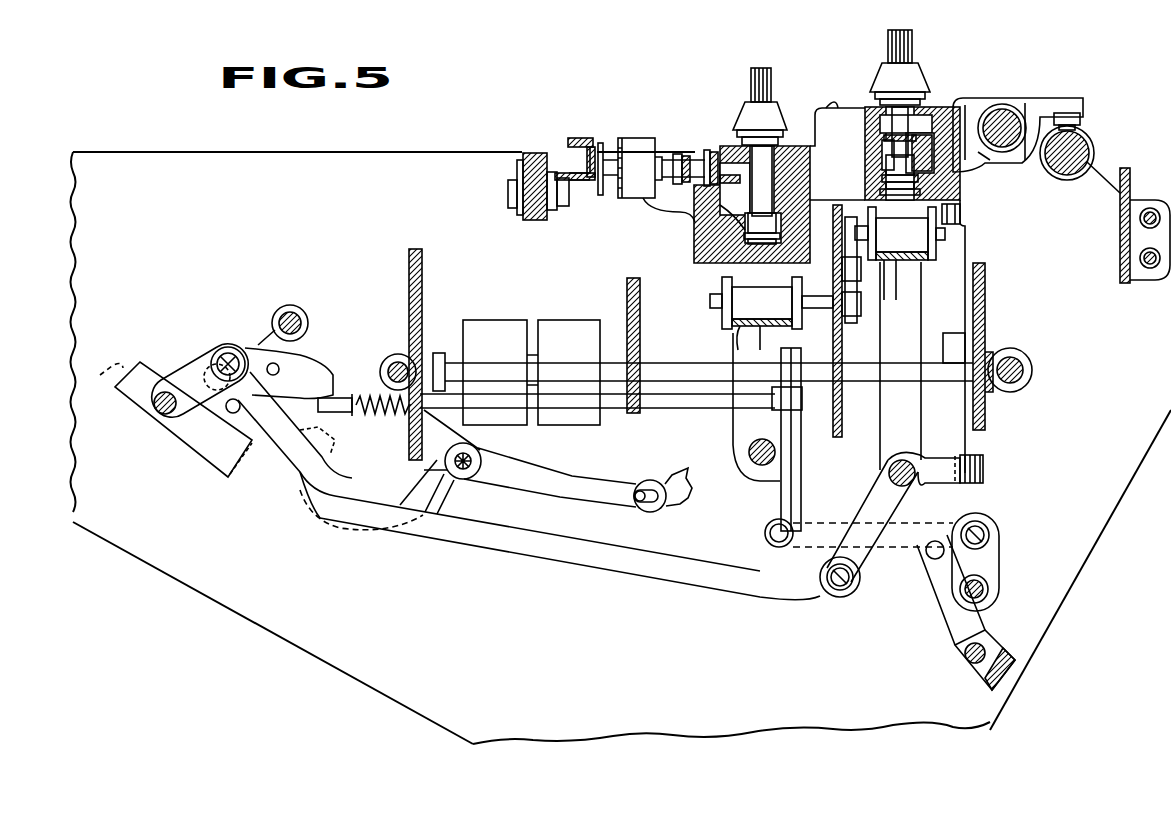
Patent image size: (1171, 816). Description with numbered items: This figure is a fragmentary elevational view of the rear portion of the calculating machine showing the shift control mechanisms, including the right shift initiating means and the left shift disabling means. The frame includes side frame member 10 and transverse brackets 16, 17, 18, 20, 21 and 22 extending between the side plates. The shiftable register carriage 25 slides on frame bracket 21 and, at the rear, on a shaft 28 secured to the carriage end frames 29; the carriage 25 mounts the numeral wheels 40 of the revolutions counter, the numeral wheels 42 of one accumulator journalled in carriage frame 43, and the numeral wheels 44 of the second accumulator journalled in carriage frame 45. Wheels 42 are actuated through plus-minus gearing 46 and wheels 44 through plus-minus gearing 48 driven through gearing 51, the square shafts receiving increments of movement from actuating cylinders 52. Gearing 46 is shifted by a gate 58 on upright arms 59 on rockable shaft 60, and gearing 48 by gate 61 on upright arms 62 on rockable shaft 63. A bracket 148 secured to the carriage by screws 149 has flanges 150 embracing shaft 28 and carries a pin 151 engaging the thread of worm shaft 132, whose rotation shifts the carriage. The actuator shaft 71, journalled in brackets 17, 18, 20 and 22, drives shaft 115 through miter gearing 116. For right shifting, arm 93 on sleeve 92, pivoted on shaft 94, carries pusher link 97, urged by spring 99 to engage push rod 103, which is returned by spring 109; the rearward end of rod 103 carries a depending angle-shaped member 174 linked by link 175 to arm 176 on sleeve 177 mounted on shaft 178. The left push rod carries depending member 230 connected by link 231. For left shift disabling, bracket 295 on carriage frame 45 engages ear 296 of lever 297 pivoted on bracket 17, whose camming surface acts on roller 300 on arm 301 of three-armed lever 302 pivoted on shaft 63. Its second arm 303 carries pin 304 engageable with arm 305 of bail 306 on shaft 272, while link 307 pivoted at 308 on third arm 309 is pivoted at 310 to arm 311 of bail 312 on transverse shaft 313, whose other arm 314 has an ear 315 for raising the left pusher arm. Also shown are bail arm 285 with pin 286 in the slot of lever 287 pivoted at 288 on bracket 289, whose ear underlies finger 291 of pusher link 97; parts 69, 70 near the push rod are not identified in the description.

The side frame member 10 is at (441, 151).
The transverse bracket 21 is at (535, 191).
The numeral wheels of the revolutions counter 40 is at (648, 140).
The numeral wheels of one accumulator 42 is at (748, 115).
The carriage frame 43 is at (797, 148).
The register carriage 25 is at (828, 106).
The carriage end frame 29 is at (844, 106).
The carriage frame 45 is at (935, 108).
The numeral wheels of the second accumulator 44 is at (912, 80).
The bracket 148 is at (973, 105).
The shaft 28 is at (1004, 108).
The screws 149 is at (978, 160).
The flanges 150 is at (1024, 102).
The pin 151 is at (1080, 127).
The worm shaft 132 is at (1088, 152).
The rear transverse bracket 16 is at (1120, 233).
The bracket 295 is at (962, 212).
The ear 296 is at (966, 240).
The lever 297 is at (965, 333).
The plus-minus gearing 48 is at (918, 245).
The gate 61 is at (925, 270).
The gearing 51 is at (862, 284).
The upright arms 62 is at (912, 401).
The transverse bracket 17 is at (990, 297).
The transverse bracket 18 is at (838, 422).
The transverse bracket 20 is at (640, 334).
The transverse bracket 22 is at (424, 292).
The plus-minus gearing 46 is at (725, 286).
The gate 58 is at (738, 345).
The actuator shaft 71 is at (684, 365).
The push rod 103 is at (678, 413).
The actuating cylinders 52 is at (540, 425).
The collar 70 is at (438, 352).
The bearing 69 is at (396, 360).
The spring 109 is at (398, 415).
The pusher link 97 is at (300, 383).
The spring 99 is at (270, 376).
The sleeve 92 is at (306, 330).
The arm 93 is at (265, 345).
The shaft 94 is at (296, 318).
The pivot 310 is at (225, 348).
The arm 311 is at (178, 355).
The bail 312 is at (103, 373).
The transverse shaft 313 is at (156, 413).
The arm 314 is at (192, 442).
The ear 315 is at (232, 476).
The finger 291 is at (285, 452).
The link 307 is at (633, 571).
The bracket 289 is at (466, 441).
The lever 287 is at (461, 478).
The pivot 288 is at (487, 473).
The arm 285 is at (674, 499).
The pin 286 is at (641, 490).
The upright arms 59 is at (735, 431).
The rockable shaft 60 is at (750, 461).
The depending member 230 is at (800, 471).
The depending angle-shaped member 174 is at (790, 426).
The link 175 is at (800, 511).
The link 231 is at (815, 527).
The third arm 309 is at (866, 497).
The three-armed lever 302 is at (890, 458).
The transverse rockable shaft 63 is at (915, 465).
The roller 300 is at (984, 471).
The arm 301 is at (935, 483).
The pivot 308 is at (838, 597).
The pin 304 is at (922, 566).
The second arm 303 is at (915, 546).
The arm 305 is at (926, 591).
The bail 306 is at (1012, 666).
The shaft 272 is at (982, 646).
The arm 176 is at (988, 551).
The sleeve 177 is at (989, 584).
The shaft 178 is at (990, 595).
The shaft 115 is at (1028, 369).
The miter gearing 116 is at (1002, 351).